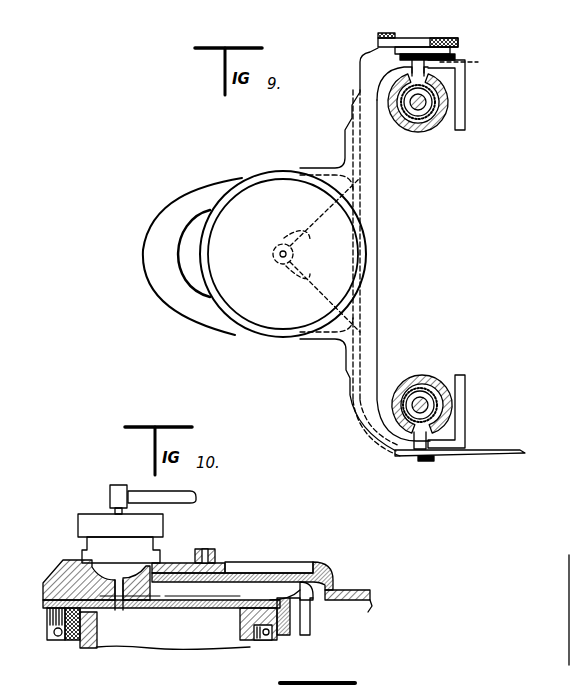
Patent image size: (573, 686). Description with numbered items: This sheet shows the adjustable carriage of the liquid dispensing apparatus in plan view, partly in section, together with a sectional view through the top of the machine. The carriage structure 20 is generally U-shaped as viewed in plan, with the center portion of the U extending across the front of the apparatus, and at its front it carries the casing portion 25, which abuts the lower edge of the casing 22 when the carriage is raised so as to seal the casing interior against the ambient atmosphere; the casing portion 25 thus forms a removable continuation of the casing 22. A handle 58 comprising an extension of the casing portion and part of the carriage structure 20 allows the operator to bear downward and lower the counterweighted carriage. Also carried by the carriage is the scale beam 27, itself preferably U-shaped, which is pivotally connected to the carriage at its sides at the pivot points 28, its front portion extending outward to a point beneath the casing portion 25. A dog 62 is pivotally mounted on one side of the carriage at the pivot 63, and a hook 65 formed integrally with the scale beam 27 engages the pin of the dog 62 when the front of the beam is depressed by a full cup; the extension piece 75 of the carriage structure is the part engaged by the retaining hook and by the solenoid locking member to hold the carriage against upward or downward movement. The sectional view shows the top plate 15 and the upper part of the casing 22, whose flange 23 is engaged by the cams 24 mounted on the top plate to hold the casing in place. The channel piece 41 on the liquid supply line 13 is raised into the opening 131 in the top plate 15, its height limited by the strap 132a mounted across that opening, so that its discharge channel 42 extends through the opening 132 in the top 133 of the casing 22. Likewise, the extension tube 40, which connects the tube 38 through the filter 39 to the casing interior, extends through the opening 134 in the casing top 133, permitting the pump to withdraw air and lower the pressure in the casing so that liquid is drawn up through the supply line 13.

In FIG. 10, the liquid supply line 13 is at (305, 630).
In FIG. 10, the top plate 15 is at (368, 590).
In FIG. 9, the carriage structure 20 is at (370, 437).
In FIG. 10, the casing 22 is at (90, 650).
In FIG. 10, the flange 23 is at (68, 640).
In FIG. 10, the cam 24 is at (47, 630).
In FIG. 9, the casing portion 25 is at (268, 340).
In FIG. 9, the scale beam 27 is at (312, 292).
In FIG. 9, the pivot point 28 is at (438, 475).
In FIG. 10, the tube 38 is at (186, 500).
In FIG. 10, the filter 39 is at (78, 527).
In FIG. 10, the extension tube 40 is at (96, 584).
In FIG. 10, the channel piece 41 is at (275, 573).
In FIG. 10, the discharge channel 42 is at (160, 608).
In FIG. 9, the handle 58 is at (150, 287).
In FIG. 9, the dog 62 is at (420, 40).
In FIG. 9, the pivot 63 is at (385, 33).
In FIG. 9, the hook 65 is at (452, 57).
In FIG. 9, the extension piece 75 is at (468, 103).
In FIG. 10, the opening 131 is at (333, 572).
In FIG. 10, the opening 132 is at (178, 608).
In FIG. 10, the strap 132a is at (215, 560).
In FIG. 10, the top 133 is at (208, 608).
In FIG. 10, the opening 134 is at (142, 610).